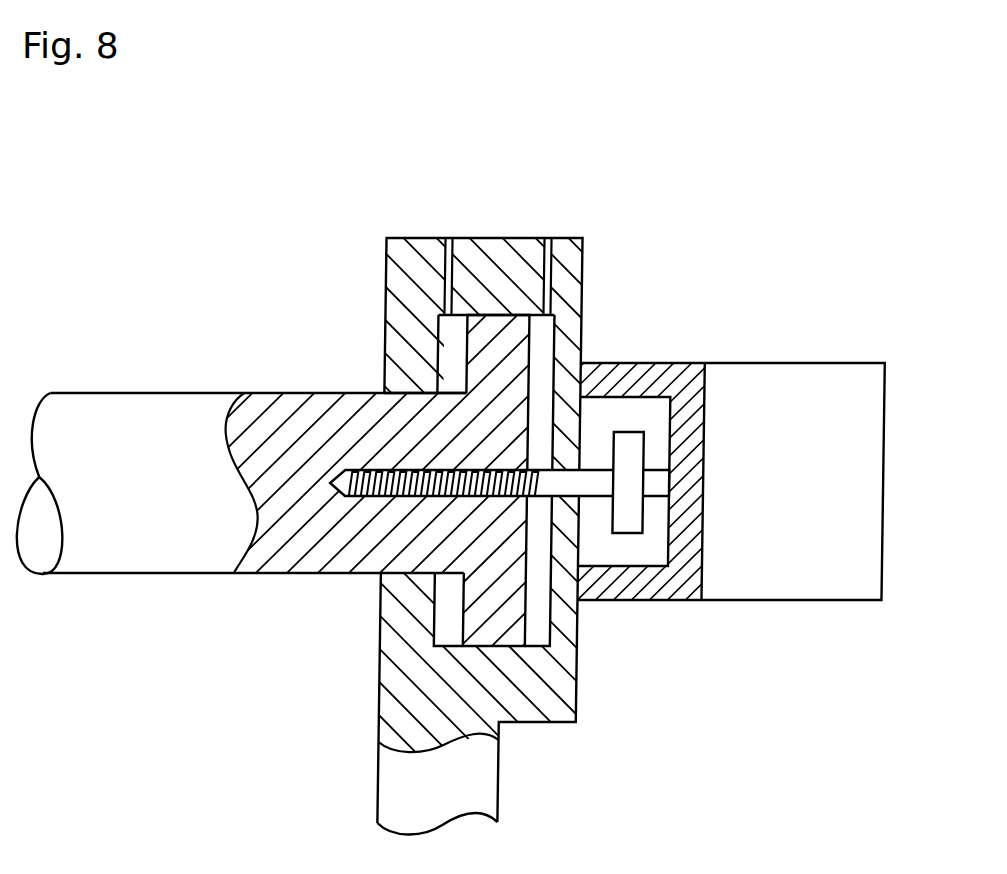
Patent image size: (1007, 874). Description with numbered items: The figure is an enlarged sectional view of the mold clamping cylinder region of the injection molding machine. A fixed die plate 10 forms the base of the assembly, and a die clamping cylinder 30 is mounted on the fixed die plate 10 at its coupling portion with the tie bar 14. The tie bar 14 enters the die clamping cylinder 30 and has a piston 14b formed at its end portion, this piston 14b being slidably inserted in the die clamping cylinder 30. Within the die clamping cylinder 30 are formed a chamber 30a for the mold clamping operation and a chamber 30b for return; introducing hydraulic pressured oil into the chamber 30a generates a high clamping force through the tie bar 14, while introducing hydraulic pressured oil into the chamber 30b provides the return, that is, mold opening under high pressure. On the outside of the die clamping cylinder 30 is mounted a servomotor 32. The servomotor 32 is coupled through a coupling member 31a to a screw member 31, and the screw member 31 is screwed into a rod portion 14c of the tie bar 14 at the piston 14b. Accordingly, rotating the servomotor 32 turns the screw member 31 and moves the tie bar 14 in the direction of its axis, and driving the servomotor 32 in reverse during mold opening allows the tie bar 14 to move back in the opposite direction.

The fixed die plate 10 is at (492, 780).
The tie bar 14 is at (119, 415).
The piston 14b is at (504, 323).
The rod portion 14c is at (413, 393).
The die clamping cylinder 30 is at (572, 235).
The chamber for mold clamping operation 30a is at (448, 260).
The chamber for return 30b is at (540, 258).
The screw member 31 is at (381, 497).
The coupling member 31a is at (628, 523).
The servomotor 32 is at (835, 378).